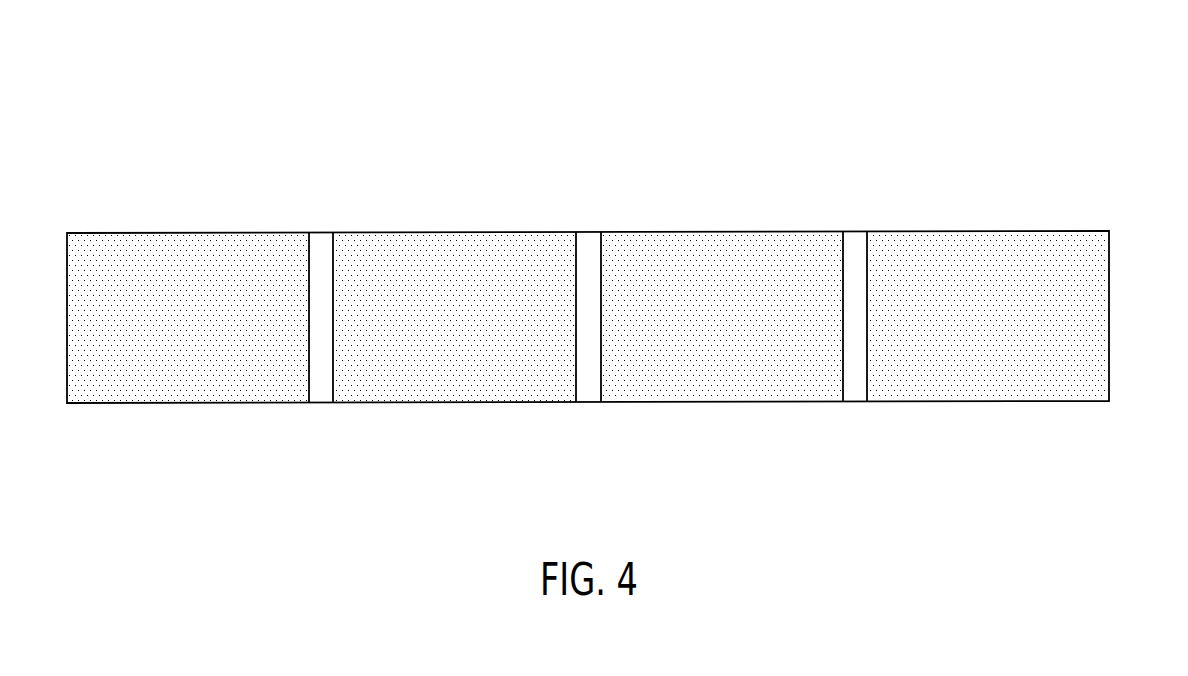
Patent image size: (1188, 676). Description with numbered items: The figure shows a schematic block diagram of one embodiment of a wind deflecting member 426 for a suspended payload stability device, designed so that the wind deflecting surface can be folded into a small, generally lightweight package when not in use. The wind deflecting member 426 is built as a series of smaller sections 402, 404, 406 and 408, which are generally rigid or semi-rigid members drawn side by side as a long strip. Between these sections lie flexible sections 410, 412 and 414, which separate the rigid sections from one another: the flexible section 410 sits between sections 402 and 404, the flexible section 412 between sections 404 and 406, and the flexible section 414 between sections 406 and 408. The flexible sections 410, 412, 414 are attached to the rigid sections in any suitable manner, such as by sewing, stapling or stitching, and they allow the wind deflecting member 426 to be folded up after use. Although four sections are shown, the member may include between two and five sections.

The wind deflecting member 426 is at (175, 90).
The section 402 is at (183, 282).
The section 404 is at (497, 278).
The section 406 is at (742, 278).
The section 408 is at (1013, 277).
The flexible section 410 is at (321, 392).
The flexible section 412 is at (588, 392).
The flexible section 414 is at (855, 392).